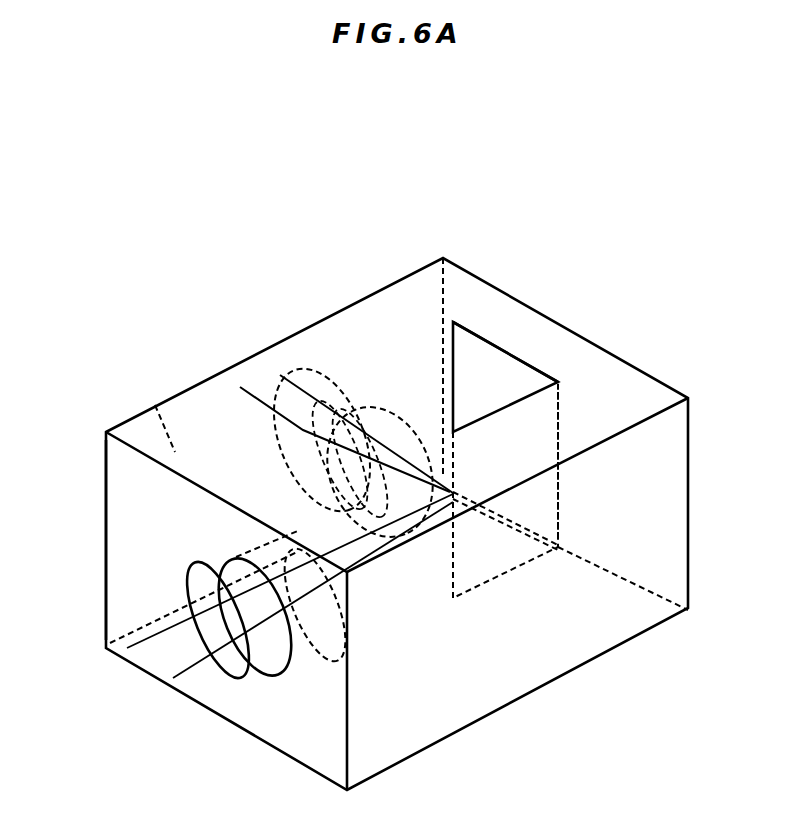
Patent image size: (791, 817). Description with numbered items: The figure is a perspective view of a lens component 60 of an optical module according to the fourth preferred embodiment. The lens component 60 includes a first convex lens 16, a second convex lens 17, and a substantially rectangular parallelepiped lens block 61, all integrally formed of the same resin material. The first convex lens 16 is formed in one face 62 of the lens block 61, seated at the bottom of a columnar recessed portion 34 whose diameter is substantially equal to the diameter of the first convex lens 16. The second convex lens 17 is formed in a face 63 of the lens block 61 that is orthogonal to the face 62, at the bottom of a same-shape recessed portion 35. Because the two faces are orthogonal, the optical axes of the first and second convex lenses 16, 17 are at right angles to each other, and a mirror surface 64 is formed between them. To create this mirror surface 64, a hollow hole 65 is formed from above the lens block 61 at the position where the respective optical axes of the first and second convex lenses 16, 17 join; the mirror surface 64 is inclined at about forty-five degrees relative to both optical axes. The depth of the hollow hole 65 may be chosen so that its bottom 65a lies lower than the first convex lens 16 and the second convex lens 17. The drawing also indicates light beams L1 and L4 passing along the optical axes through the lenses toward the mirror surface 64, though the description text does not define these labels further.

The lens component 60 is at (585, 278).
The lens block 61 is at (422, 292).
The face of the lens block 62 is at (116, 517).
The face of the lens block 63 is at (155, 405).
The mirror surface 64 is at (500, 382).
The hollow hole 65 is at (450, 397).
The bottom of the hollow hole 65a is at (505, 545).
The first convex lens 16 is at (215, 582).
The second convex lens 17 is at (383, 407).
The recessed portion 34 is at (264, 660).
The recessed portion 35 is at (240, 387).
The light beam L1 is at (137, 636).
The light beam L4 is at (190, 672).